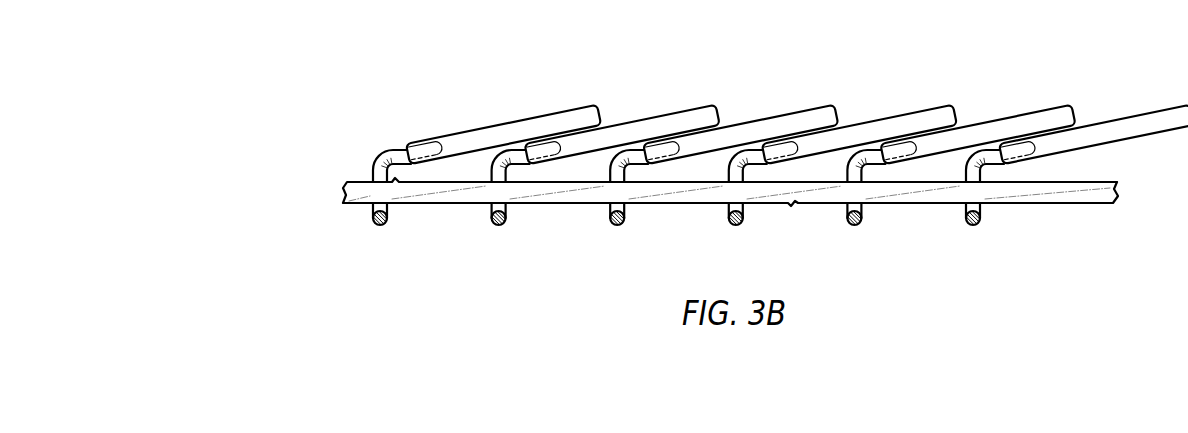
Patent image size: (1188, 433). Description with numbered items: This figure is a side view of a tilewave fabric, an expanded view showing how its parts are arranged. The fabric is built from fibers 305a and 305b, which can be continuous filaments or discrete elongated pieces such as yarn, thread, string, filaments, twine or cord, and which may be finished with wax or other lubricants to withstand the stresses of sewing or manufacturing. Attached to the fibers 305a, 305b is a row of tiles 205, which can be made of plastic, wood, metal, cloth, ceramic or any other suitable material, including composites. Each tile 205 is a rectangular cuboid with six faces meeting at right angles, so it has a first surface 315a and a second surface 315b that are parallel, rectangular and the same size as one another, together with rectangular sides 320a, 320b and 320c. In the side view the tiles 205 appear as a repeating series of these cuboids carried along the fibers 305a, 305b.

The tile 205 is at (659, 118).
The fiber 305a is at (322, 197).
The fiber 305b is at (369, 238).
The first surface 315a is at (1040, 103).
The second surface 315b is at (937, 173).
The side 320a is at (422, 177).
The side 320b is at (795, 118).
The side 320c is at (966, 100).